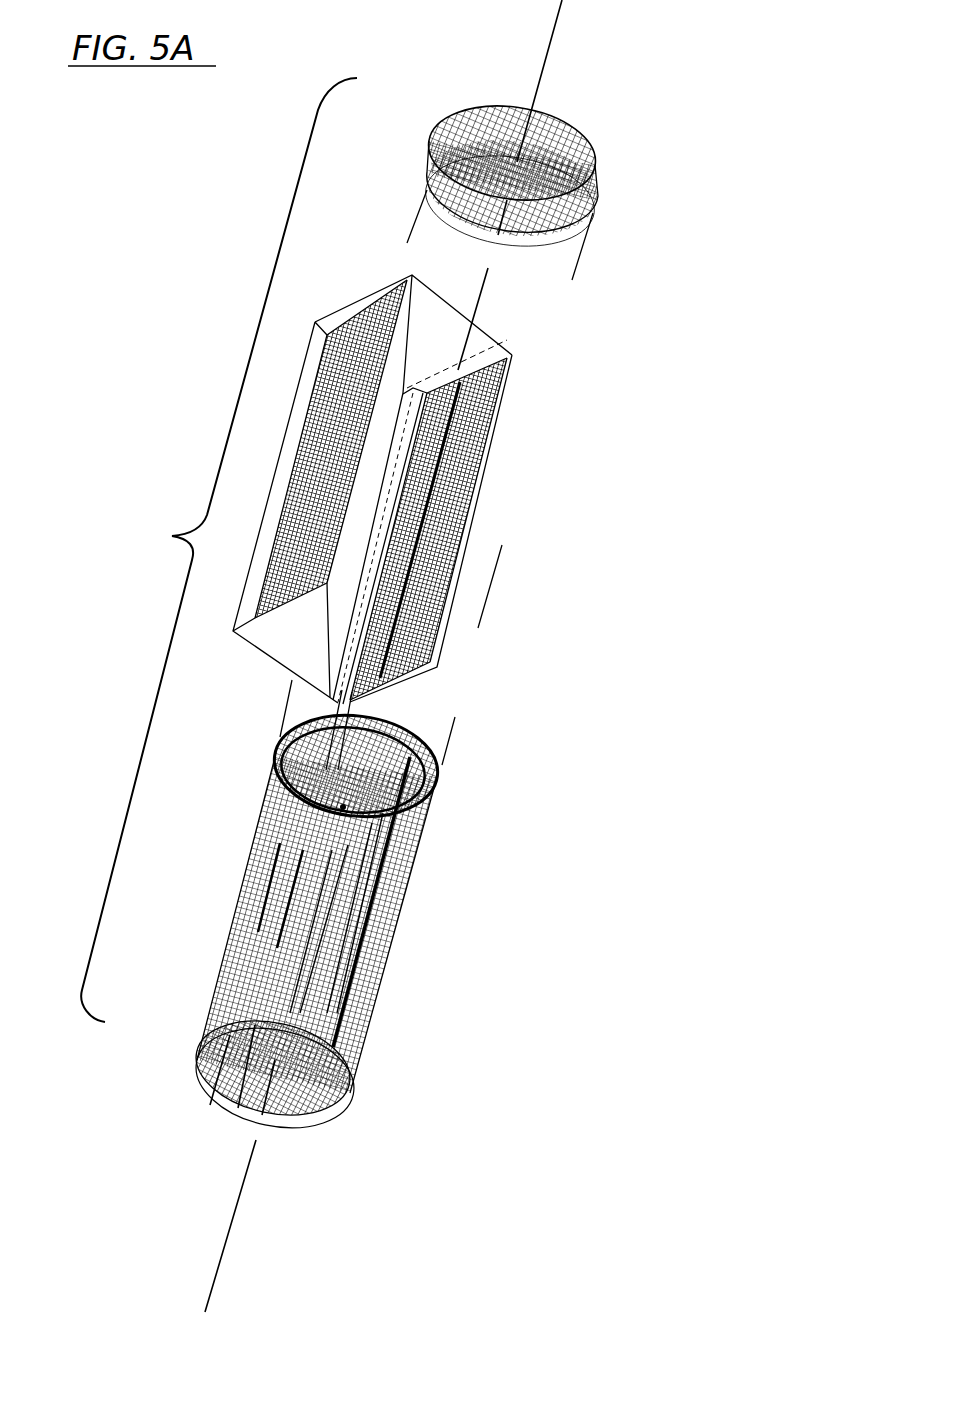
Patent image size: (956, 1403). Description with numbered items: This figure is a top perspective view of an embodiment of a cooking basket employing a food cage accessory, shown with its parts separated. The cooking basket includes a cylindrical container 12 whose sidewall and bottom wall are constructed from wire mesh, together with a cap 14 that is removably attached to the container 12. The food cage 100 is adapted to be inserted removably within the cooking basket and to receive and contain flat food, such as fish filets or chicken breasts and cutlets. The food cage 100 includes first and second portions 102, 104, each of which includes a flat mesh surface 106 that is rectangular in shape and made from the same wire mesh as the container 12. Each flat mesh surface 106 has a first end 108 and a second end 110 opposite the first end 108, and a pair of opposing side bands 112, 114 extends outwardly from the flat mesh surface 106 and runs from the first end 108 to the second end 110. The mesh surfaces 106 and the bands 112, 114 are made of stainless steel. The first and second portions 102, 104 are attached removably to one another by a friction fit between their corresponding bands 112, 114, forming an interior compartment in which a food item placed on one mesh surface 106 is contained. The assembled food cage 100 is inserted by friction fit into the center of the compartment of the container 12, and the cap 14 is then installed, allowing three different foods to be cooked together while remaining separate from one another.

The container 12 is at (395, 920).
The cap 14 is at (573, 133).
The food cage 100 is at (515, 497).
The first portion 102 is at (273, 475).
The second portion 104 is at (472, 511).
The flat mesh surface 106 is at (300, 540).
The first end 108 is at (380, 288).
The second end 110 is at (297, 600).
The side band 112 is at (305, 407).
The side band 114 is at (413, 293).